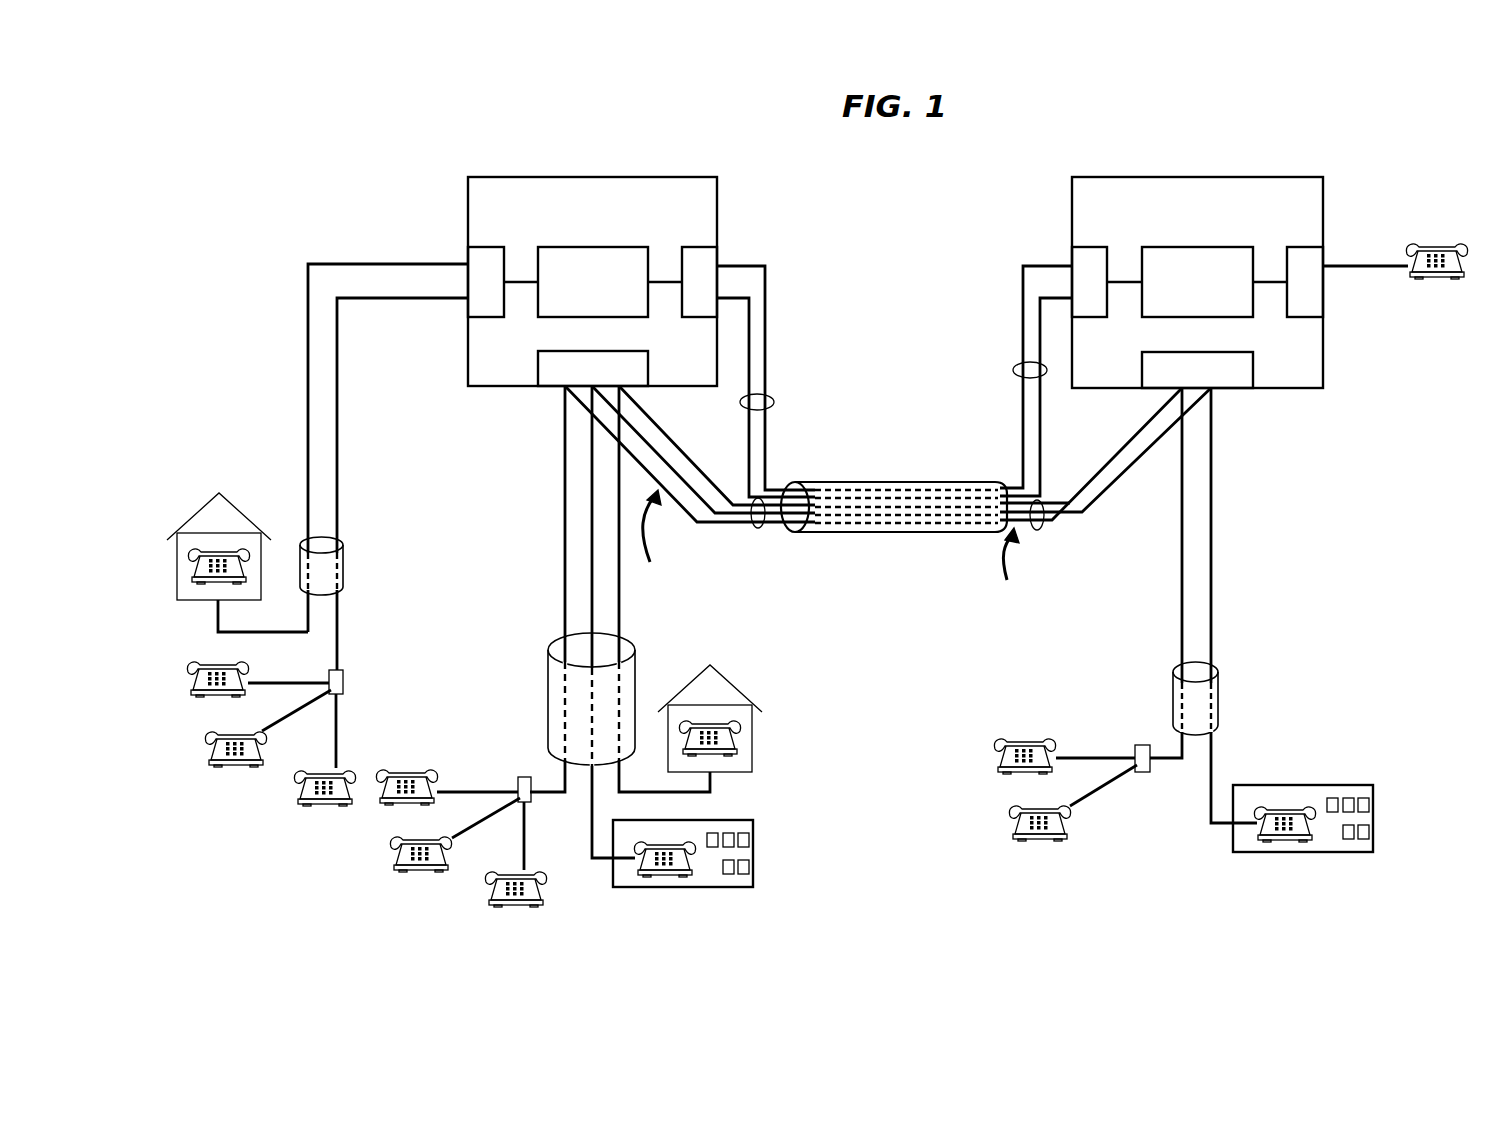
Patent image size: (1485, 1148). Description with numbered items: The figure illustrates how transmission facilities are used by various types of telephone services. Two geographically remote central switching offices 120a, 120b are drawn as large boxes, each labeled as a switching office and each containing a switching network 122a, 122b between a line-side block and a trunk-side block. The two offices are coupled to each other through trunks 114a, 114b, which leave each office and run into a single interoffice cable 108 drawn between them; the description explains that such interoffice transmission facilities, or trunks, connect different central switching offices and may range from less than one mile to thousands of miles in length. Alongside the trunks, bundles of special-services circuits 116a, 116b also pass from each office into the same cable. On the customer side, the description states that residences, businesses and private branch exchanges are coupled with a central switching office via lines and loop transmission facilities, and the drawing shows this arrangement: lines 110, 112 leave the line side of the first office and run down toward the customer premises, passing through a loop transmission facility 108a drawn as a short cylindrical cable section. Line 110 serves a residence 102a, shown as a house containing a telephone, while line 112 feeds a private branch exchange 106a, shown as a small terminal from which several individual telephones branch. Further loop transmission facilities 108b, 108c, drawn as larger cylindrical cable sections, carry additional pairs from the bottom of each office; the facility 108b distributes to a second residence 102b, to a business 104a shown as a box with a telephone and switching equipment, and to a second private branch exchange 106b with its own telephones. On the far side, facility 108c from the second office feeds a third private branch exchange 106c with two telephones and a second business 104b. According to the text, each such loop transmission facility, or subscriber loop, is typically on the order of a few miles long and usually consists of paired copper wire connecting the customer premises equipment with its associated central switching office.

The residence 102a is at (236, 511).
The residence 102b is at (755, 748).
The business 104a is at (698, 887).
The business 104b is at (1315, 852).
The private branch exchange 106a is at (343, 683).
The private branch exchange 106b is at (524, 777).
The private branch exchange 106c is at (1142, 745).
The loop transmission facility 108 is at (868, 532).
The loop transmission facility 108a is at (343, 572).
The loop transmission facility 108b is at (548, 668).
The loop transmission facility 108c is at (1218, 688).
The line 110 is at (307, 330).
The line 112 is at (338, 410).
The trunks 114a is at (774, 403).
The trunks 114b is at (1013, 370).
The special-services circuits 116a is at (759, 528).
The special-services circuits 116b is at (1038, 530).
The central switching office 120a is at (717, 199).
The central switching office 120b is at (1323, 200).
The switching network 122a is at (553, 317).
The switching network 122b is at (1155, 317).